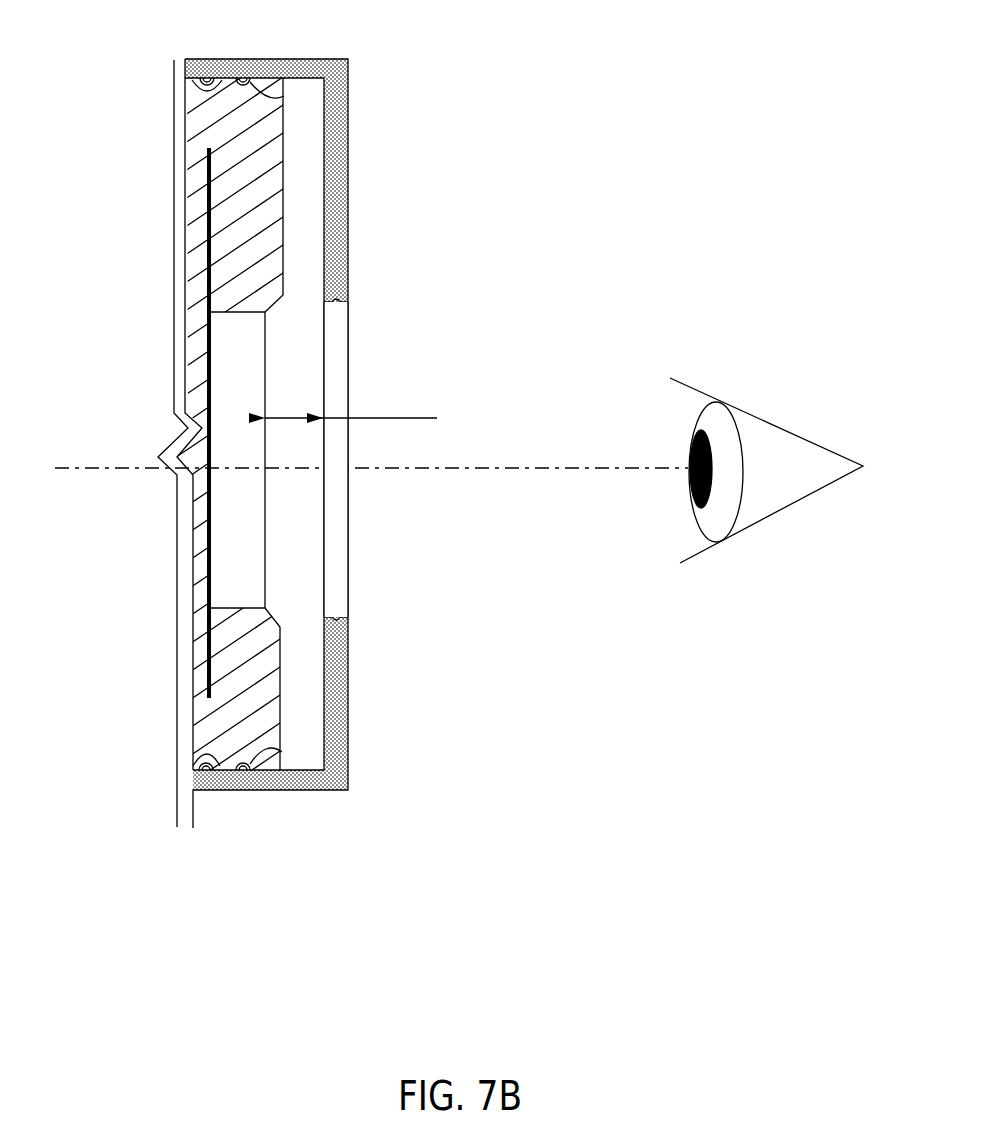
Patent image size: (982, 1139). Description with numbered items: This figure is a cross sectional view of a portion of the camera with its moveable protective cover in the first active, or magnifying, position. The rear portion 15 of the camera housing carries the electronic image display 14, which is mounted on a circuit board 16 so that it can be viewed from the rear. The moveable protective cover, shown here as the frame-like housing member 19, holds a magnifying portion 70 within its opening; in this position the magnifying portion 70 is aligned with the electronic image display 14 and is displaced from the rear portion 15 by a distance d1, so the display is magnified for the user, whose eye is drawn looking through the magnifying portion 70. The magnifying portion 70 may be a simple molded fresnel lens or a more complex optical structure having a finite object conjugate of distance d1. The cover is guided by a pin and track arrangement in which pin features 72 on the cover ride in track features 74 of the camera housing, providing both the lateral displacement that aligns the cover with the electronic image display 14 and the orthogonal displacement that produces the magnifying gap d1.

The electronic image display 14 is at (246, 554).
The rear portion 15 is at (283, 222).
The circuit board 16 is at (209, 393).
The housing frame 19 is at (348, 148).
The magnifying portion 70 is at (330, 370).
The pin features 72 is at (207, 80).
The track features 74 is at (210, 81).
The distance d1 is at (365, 420).